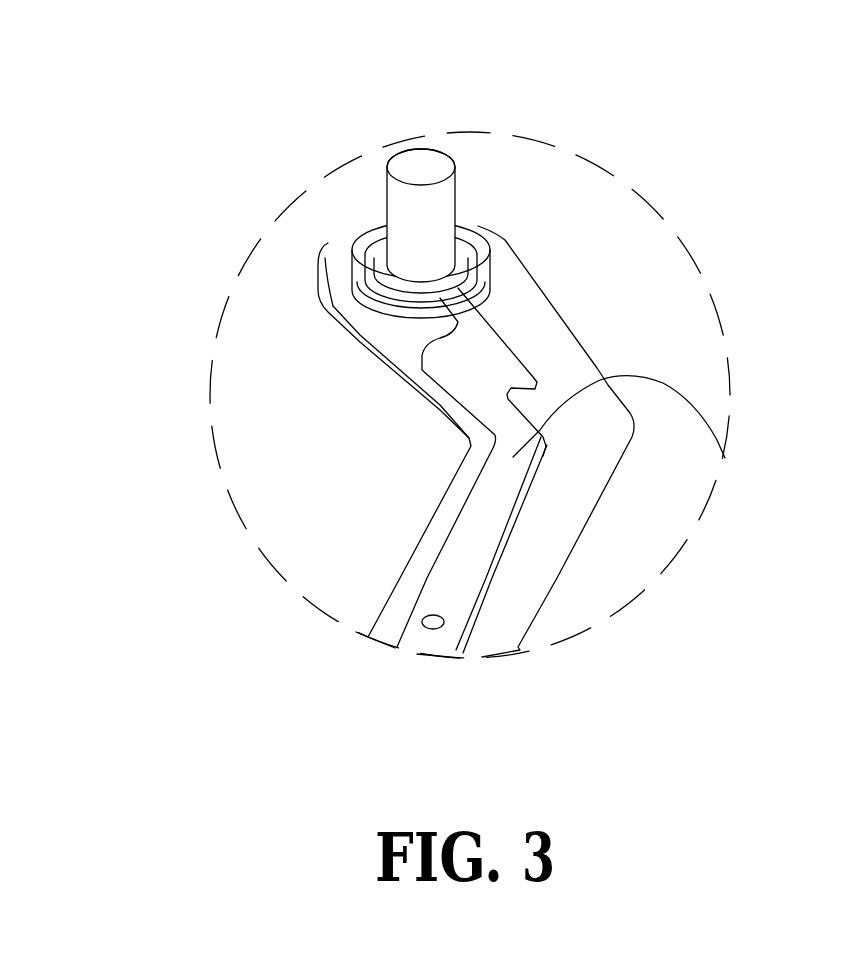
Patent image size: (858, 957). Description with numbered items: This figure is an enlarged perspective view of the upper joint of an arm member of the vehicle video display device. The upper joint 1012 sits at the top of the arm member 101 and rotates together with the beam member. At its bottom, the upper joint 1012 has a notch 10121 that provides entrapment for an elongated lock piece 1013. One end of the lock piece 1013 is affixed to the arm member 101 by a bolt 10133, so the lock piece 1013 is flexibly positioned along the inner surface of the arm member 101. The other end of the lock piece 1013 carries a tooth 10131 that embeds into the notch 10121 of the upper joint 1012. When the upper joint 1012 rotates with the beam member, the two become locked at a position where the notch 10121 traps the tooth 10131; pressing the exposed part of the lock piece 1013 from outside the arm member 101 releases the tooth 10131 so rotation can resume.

The arm member 101 is at (630, 223).
The upper joint 1012 is at (420, 165).
The notch 10121 is at (380, 262).
The lock piece 1013 is at (728, 460).
The tooth 10131 is at (466, 232).
The bolt 10133 is at (437, 629).